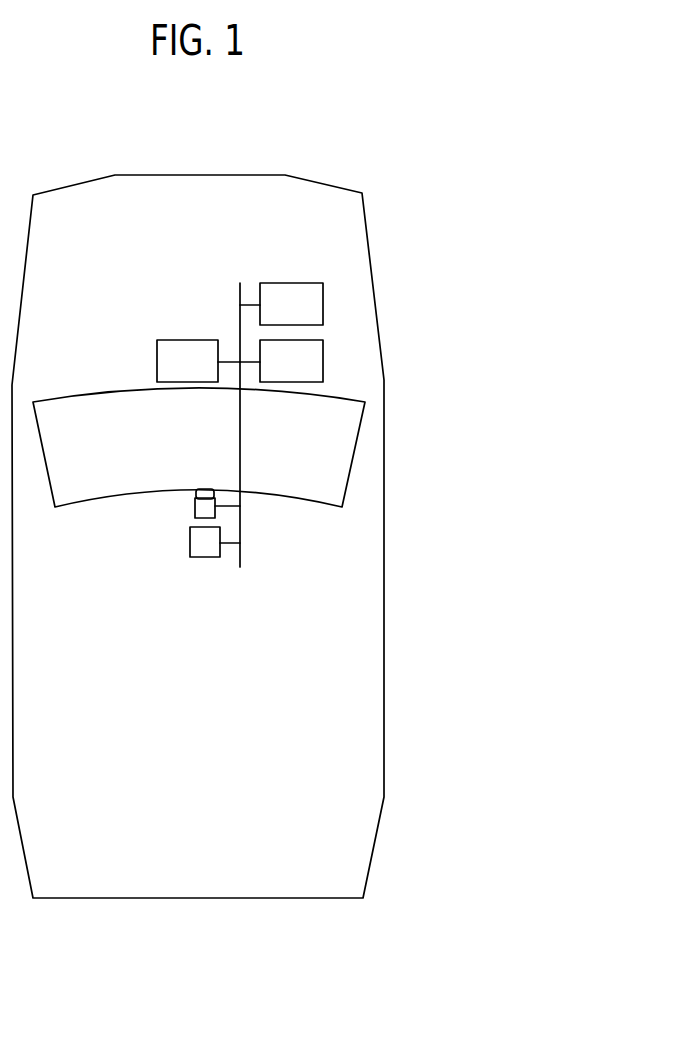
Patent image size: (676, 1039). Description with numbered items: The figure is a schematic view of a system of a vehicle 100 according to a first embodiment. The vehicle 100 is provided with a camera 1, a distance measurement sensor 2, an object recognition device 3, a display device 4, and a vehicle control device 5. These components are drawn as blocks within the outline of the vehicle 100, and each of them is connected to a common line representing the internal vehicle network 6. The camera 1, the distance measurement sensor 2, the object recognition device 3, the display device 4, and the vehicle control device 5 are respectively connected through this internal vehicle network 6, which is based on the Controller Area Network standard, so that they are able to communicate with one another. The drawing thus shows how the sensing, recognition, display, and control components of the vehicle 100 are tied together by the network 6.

The vehicle 100 is at (385, 773).
The internal vehicle network 6 is at (240, 442).
The object recognition device 3 is at (323, 303).
The vehicle control device 5 is at (323, 365).
The display device 4 is at (157, 363).
The camera 1 is at (195, 504).
The distance measurement sensor 2 is at (190, 543).